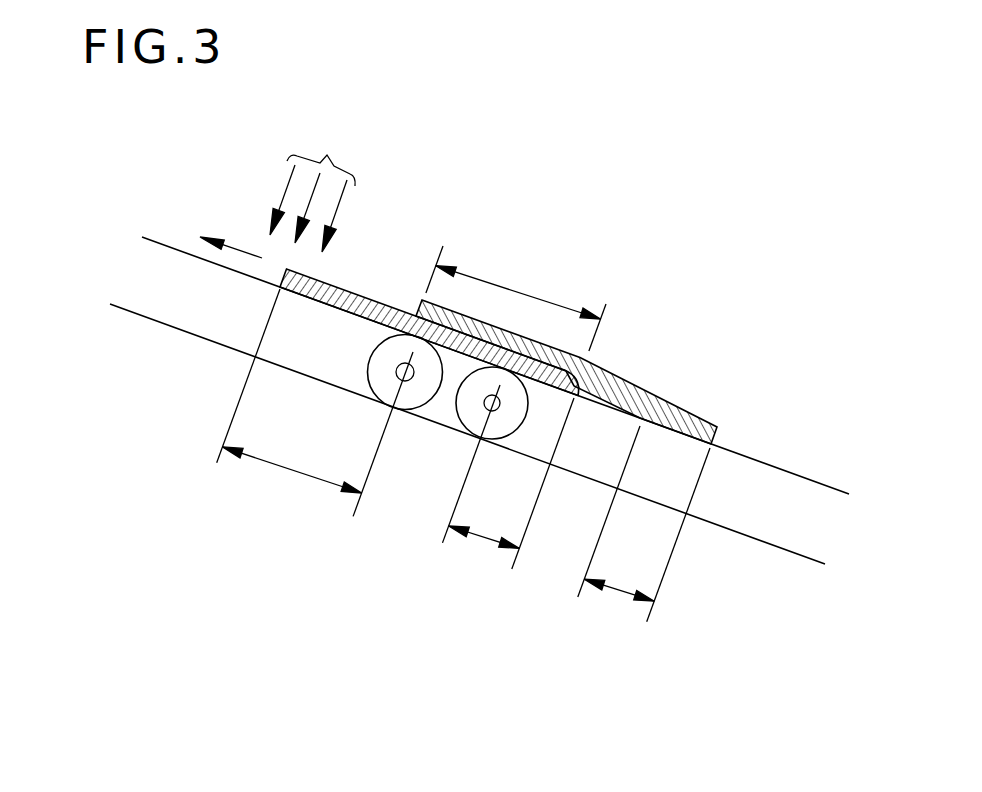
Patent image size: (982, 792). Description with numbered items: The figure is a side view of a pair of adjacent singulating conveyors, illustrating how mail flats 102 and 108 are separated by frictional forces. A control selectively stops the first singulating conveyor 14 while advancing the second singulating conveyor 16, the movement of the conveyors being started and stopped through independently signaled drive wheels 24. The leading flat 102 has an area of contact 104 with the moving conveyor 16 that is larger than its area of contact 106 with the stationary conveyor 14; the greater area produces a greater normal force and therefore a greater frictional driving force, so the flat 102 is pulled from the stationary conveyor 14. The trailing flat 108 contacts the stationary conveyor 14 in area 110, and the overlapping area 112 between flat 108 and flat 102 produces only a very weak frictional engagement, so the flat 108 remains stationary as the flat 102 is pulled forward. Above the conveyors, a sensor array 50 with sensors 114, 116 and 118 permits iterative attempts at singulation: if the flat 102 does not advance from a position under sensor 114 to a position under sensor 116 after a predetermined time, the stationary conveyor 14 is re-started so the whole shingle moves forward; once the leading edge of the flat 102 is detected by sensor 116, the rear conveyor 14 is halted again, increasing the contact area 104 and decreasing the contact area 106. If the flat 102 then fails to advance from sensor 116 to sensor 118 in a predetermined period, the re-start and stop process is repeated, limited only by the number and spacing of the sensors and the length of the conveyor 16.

The first singulating conveyor 14 is at (750, 540).
The second singulating conveyor 16 is at (172, 327).
The drive wheel 24 is at (465, 422).
The sensor array 50 is at (321, 153).
The mail flat 102 is at (337, 289).
The area of contact 104 is at (295, 472).
The area of contact 106 is at (478, 540).
The mail flat 108 is at (620, 382).
The contact area 110 is at (617, 588).
The overlapping area 112 is at (513, 293).
The sensor 114 is at (333, 218).
The sensor 116 is at (317, 187).
The sensor 118 is at (291, 176).